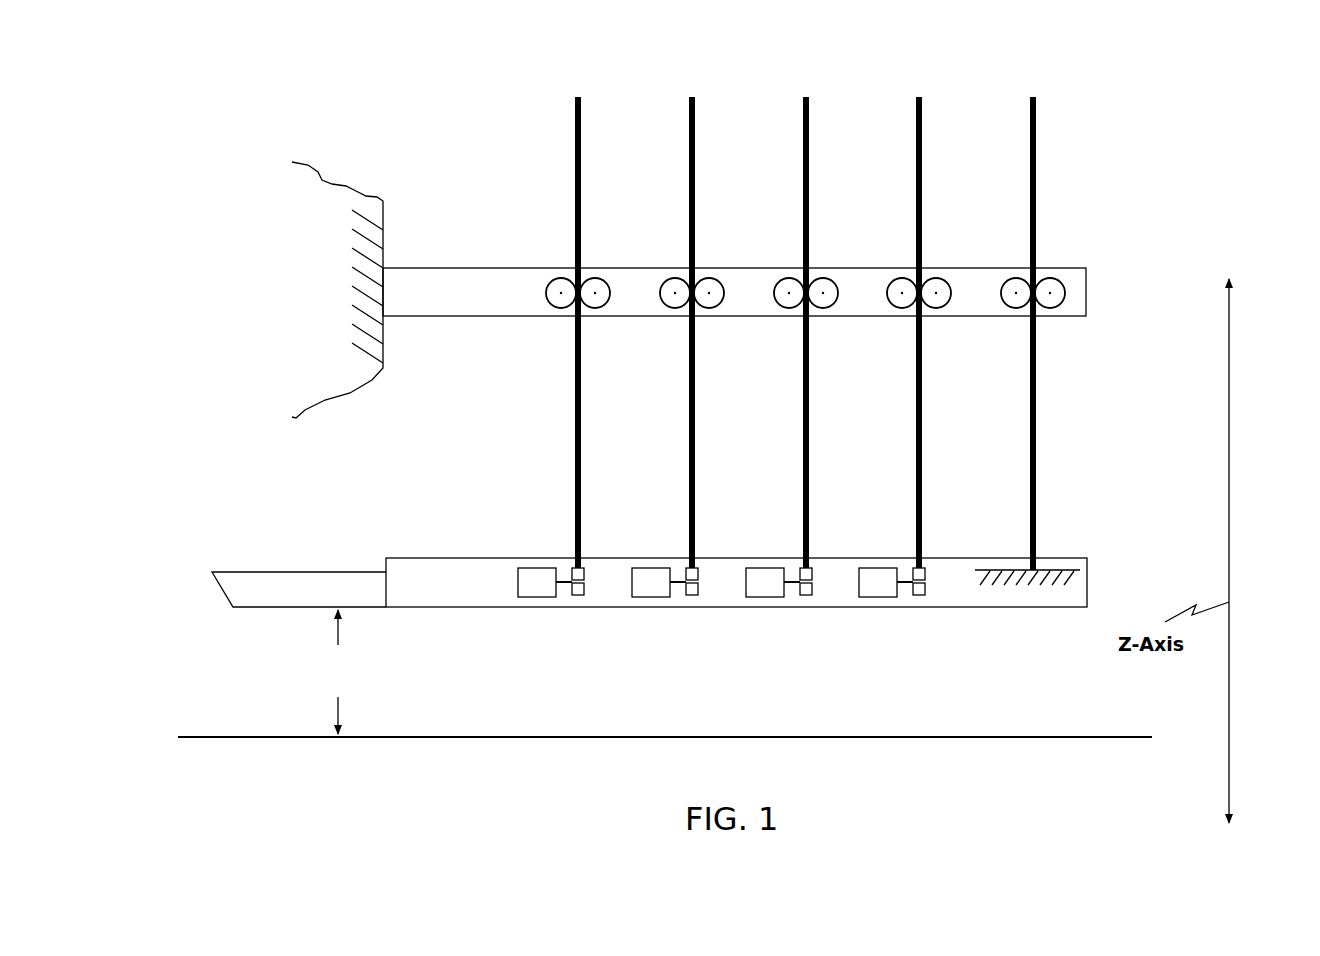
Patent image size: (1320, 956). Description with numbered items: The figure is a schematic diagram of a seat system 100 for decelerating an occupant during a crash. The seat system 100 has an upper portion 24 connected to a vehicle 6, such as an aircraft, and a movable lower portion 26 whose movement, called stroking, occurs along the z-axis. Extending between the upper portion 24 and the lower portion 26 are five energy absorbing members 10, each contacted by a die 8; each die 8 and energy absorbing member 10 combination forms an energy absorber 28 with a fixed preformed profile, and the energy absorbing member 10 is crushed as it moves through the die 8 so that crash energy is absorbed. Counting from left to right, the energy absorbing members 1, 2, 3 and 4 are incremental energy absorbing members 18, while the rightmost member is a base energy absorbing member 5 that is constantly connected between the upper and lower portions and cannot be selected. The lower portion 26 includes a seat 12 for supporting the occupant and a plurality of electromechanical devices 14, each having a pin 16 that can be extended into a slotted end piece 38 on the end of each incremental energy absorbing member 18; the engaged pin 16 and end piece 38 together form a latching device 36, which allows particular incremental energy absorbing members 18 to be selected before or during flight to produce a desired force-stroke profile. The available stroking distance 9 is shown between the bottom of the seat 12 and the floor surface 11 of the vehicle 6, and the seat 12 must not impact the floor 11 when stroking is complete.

The seat system 100 is at (426, 154).
The vehicle 6 is at (328, 304).
The energy absorbing member 10 is at (606, 133).
The energy absorbing member 1 is at (581, 400).
The energy absorbing member 2 is at (695, 409).
The energy absorbing member 3 is at (809, 404).
The energy absorbing member 4 is at (922, 404).
The base energy absorbing member 5 is at (1036, 400).
The die 8 is at (560, 308).
The energy absorber 28 is at (571, 278).
The upper portion 24 is at (498, 291).
The lower portion 26 is at (408, 577).
The seat 12 is at (305, 572).
The incremental energy absorbing member 18 is at (576, 468).
The latching device 36 is at (570, 574).
The electromechanical device 14 is at (549, 593).
The pin 16 is at (569, 597).
The end piece 38 is at (581, 597).
The stroking distance 9 is at (337, 672).
The floor surface 11 is at (673, 737).